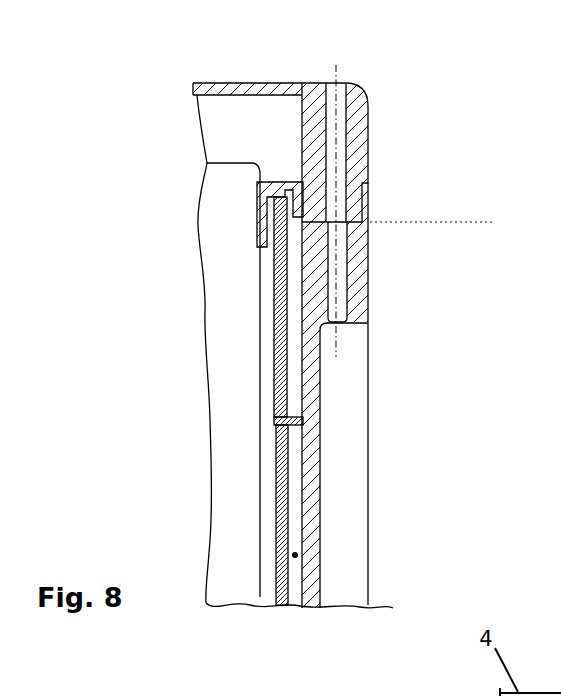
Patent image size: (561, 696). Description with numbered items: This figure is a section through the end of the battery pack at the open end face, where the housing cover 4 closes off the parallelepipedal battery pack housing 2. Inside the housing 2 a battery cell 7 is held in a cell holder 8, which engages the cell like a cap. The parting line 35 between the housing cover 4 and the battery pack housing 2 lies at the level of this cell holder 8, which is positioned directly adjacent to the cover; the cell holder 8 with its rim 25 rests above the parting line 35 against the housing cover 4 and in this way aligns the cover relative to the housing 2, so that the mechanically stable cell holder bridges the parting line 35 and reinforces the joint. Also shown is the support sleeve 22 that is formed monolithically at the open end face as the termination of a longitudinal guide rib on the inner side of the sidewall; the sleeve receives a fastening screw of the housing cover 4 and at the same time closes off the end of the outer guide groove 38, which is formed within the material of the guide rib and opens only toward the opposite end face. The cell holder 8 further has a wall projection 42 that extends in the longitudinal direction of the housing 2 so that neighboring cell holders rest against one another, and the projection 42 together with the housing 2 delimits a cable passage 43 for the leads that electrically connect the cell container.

The battery pack housing 2 is at (368, 402).
The housing cover 4 is at (218, 84).
The battery cell 7 is at (208, 225).
The cell holder 8 is at (259, 178).
The support sleeve 22 is at (366, 268).
The rim 25 is at (322, 190).
The parting line 35 is at (437, 222).
The guide groove 38 is at (352, 525).
The wall projection 42 is at (278, 302).
The cable passage 43 is at (295, 555).